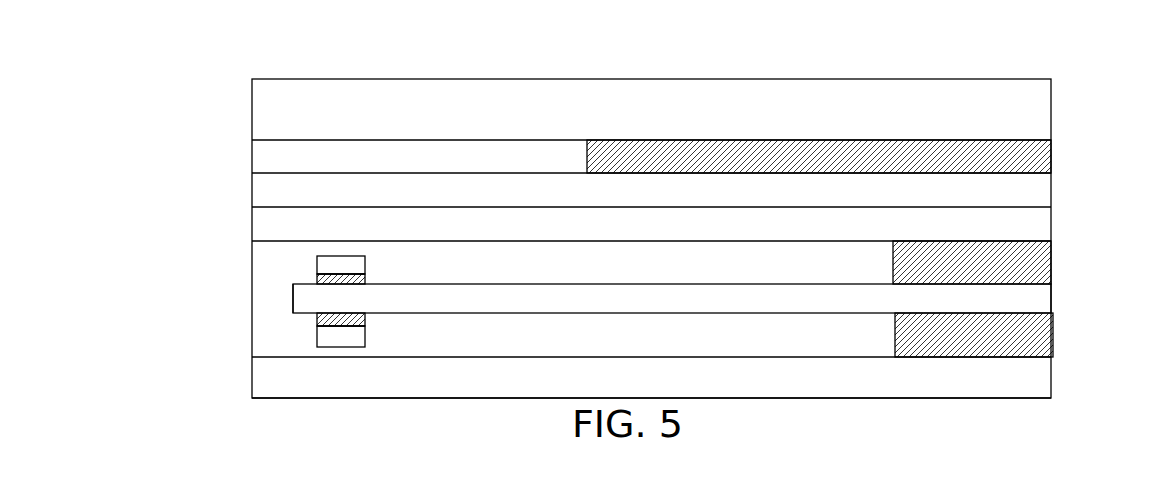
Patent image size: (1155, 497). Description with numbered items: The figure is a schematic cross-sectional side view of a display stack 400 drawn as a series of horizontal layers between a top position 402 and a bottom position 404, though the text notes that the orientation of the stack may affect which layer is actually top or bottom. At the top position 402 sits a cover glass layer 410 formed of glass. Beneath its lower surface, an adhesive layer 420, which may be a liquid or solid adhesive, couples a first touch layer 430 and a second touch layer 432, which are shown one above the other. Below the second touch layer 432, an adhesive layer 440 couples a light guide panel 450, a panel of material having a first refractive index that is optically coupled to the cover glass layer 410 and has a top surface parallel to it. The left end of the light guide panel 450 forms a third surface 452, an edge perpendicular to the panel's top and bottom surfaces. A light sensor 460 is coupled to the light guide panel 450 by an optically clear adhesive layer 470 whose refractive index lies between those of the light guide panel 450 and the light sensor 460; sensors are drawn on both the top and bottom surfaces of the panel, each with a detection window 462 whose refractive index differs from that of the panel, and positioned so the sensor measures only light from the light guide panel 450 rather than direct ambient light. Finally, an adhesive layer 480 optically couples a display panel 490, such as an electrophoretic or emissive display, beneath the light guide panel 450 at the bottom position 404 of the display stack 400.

The display stack 400 is at (1038, 27).
The top position 402 is at (170, 95).
The bottom side 404 is at (164, 366).
The cover glass layer 410 is at (651, 120).
The adhesive layer 420 is at (1040, 162).
The first touch layer 430 is at (651, 194).
The second touch layer 432 is at (651, 228).
The adhesive layer 440 is at (1052, 257).
The light guide panel 450 is at (672, 298).
The third surface 452 is at (270, 290).
The light sensor 460 is at (365, 263).
The detection window 462 is at (317, 278).
The optically clear adhesive layer 470 is at (365, 278).
The adhesive layer 480 is at (1054, 336).
The display panel 490 is at (651, 383).